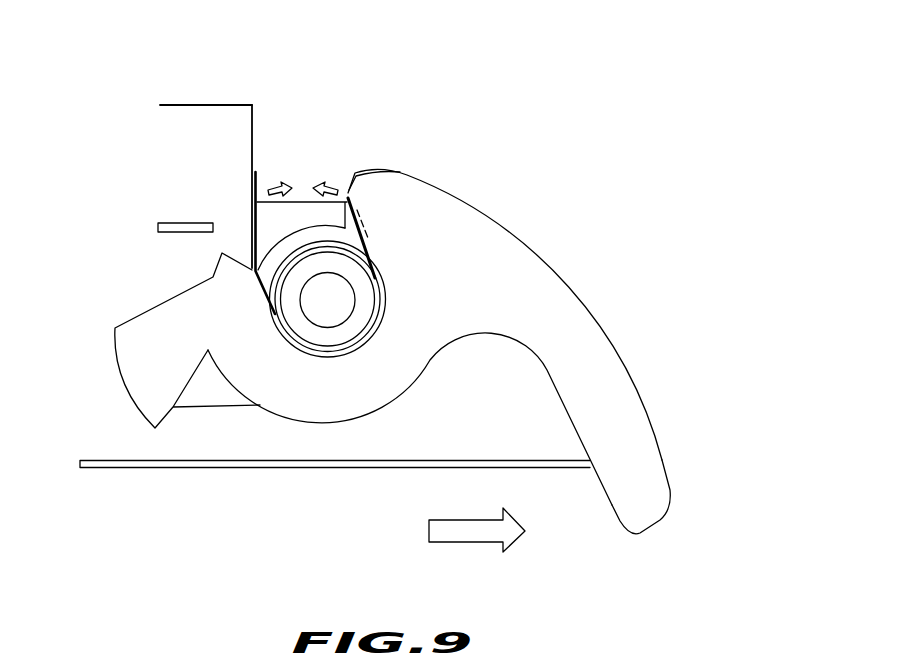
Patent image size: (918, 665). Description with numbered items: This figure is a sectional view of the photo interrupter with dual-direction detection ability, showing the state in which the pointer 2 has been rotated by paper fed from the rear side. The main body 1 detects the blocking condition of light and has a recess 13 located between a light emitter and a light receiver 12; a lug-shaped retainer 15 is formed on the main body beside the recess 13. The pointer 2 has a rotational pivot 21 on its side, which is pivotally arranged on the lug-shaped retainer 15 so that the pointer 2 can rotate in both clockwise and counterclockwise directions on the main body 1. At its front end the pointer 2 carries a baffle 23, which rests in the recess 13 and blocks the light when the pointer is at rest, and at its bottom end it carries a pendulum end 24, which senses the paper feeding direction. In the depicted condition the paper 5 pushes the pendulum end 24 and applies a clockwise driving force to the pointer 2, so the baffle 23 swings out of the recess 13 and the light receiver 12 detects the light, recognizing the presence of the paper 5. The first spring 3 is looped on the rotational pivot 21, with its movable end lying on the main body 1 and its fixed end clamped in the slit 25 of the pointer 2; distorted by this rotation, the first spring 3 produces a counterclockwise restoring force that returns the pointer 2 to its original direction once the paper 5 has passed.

The main body 1 is at (172, 103).
The recess 13 is at (232, 123).
The light receiver 12 is at (175, 227).
The lug-shaped retainer 15 is at (302, 208).
The baffle 23 is at (133, 358).
The first spring 3 is at (288, 342).
The rotational pivot 21 is at (352, 328).
The pointer 2 is at (540, 273).
The slit 25 is at (360, 186).
The pendulum end 24 is at (662, 483).
The paper 5 is at (362, 462).